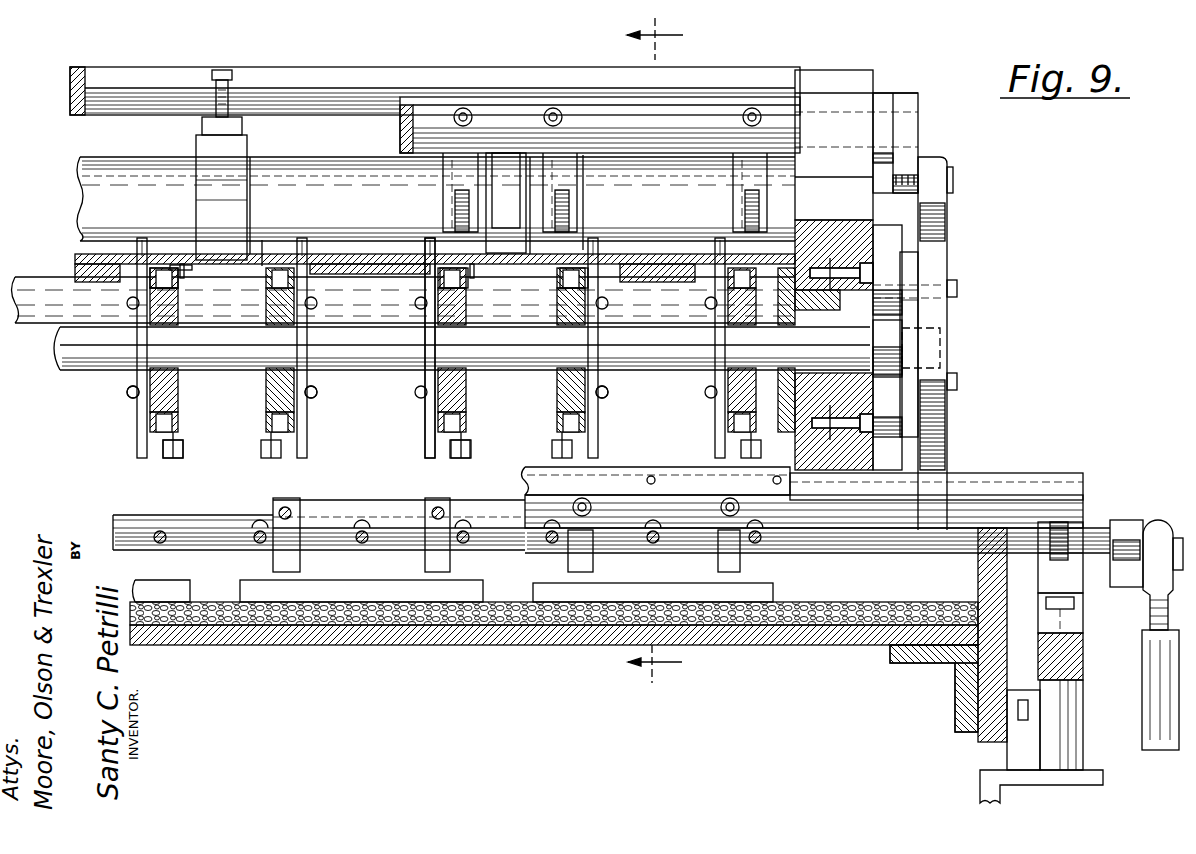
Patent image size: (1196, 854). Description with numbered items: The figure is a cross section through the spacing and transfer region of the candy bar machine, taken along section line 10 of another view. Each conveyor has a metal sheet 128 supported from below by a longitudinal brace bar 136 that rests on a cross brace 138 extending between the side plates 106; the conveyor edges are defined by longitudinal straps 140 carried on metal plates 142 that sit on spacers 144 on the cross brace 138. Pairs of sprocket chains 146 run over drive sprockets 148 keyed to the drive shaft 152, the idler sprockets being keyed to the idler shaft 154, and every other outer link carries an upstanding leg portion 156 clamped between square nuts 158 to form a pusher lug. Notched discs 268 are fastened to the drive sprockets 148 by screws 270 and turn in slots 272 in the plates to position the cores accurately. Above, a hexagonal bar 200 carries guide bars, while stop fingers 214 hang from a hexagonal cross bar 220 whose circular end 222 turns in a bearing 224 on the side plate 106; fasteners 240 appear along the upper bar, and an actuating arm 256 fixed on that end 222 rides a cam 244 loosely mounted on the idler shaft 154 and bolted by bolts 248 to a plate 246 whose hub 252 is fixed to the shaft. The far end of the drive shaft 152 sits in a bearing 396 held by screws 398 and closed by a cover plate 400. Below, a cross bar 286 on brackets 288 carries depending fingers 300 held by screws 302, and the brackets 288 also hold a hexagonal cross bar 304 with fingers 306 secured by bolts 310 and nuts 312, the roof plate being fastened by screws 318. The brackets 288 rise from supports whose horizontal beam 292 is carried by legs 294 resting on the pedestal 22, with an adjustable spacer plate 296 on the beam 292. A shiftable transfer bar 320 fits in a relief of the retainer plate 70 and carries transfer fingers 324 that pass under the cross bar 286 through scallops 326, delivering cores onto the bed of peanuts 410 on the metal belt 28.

The section line 10 is at (664, 350).
The pedestal 22 is at (980, 792).
The metal belt 28 is at (527, 643).
The retainer plate 70 is at (978, 572).
The side plate 106 is at (875, 236).
The metal sheet 128 is at (124, 254).
The longitudinal brace bar 136 is at (80, 262).
The cross brace 138 is at (390, 322).
The longitudinal strap 140 is at (220, 240).
The metal plate 142 is at (258, 256).
The spacer 144 is at (232, 272).
The sprocket chain 146 is at (185, 290).
The drive sprocket 148 is at (265, 382).
The drive shaft 152 is at (95, 340).
The idler shaft 154 is at (945, 335).
The upstanding leg portion 156 is at (174, 254).
The square nut 158 is at (268, 264).
The hexagonal bar 200 is at (418, 67).
The finger 214 is at (545, 172).
The hexagonal cross bar 220 is at (705, 115).
The circular end 222 is at (835, 120).
The bearing 224 is at (875, 150).
The rivet 240 is at (553, 107).
The cam 244 is at (930, 223).
The plate 246 is at (915, 262).
The bolt 248 is at (957, 284).
The hub 252 is at (945, 412).
The actuating arm 256 is at (905, 168).
The notched disc 268 is at (138, 422).
The screw 270 is at (130, 310).
The slot 272 is at (588, 248).
The cross bar 286 is at (365, 518).
The bracket 288 is at (1072, 555).
The horizontal beam 292 is at (1075, 662).
The leg 294 is at (1070, 737).
The spacer plate 296 is at (1075, 622).
The depending finger 300 is at (300, 560).
The screw 302 is at (286, 506).
The hexagonal cross bar 304 is at (1028, 482).
The finger 306 is at (594, 560).
The bolt 310 is at (668, 466).
The nut 312 is at (582, 498).
The screw 318 is at (790, 484).
The shiftable transfer bar 320 is at (193, 515).
The transfer finger 324 is at (160, 530).
The scallop 326 is at (362, 522).
The bearing 396 is at (950, 300).
The screw 398 is at (875, 276).
The cover plate 400 is at (875, 352).
The bed of peanuts 410 is at (470, 606).